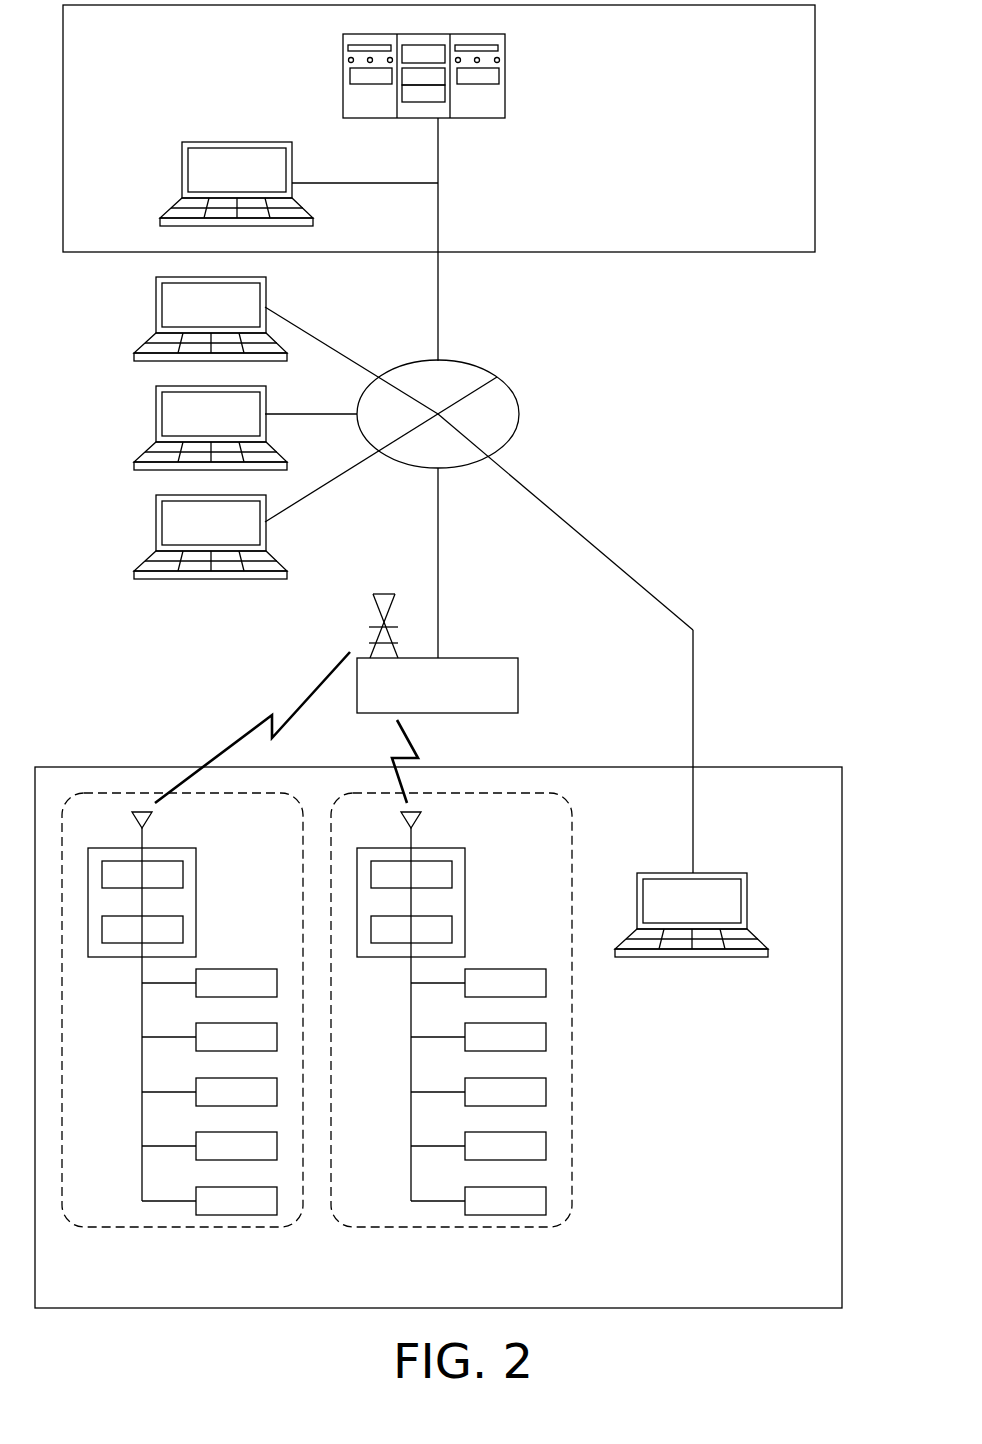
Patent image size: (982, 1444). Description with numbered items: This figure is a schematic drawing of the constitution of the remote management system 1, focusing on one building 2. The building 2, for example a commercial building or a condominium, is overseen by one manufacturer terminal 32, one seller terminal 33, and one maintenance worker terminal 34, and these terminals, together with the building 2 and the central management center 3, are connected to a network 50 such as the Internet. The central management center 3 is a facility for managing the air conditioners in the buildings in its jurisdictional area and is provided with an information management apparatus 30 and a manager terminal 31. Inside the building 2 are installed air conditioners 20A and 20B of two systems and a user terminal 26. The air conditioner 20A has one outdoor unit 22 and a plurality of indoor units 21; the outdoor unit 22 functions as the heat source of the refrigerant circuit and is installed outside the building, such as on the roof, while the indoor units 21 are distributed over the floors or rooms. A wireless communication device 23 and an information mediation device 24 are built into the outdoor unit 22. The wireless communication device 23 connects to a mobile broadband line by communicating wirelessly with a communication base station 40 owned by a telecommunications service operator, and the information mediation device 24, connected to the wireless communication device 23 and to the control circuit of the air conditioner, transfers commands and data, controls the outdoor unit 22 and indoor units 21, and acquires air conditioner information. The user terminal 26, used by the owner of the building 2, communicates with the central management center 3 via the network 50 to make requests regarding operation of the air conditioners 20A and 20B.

The remote management system 1 is at (725, 428).
The building 2 is at (790, 767).
The central management center 3 is at (763, 252).
The air conditioner 20A is at (115, 1227).
The air conditioner 20B is at (384, 1227).
The indoor unit 21 is at (220, 1187).
The outdoor unit 22 is at (172, 848).
The wireless communication device 23 is at (183, 875).
The information mediation device 24 is at (183, 930).
The user terminal 26 is at (748, 900).
The information management apparatus 30 is at (505, 55).
The manager terminal 31 is at (182, 172).
The manufacturer terminal 32 is at (156, 309).
The seller terminal 33 is at (156, 416).
The maintenance worker terminal 34 is at (156, 526).
The communication base station 40 is at (518, 675).
The network 50 is at (513, 390).